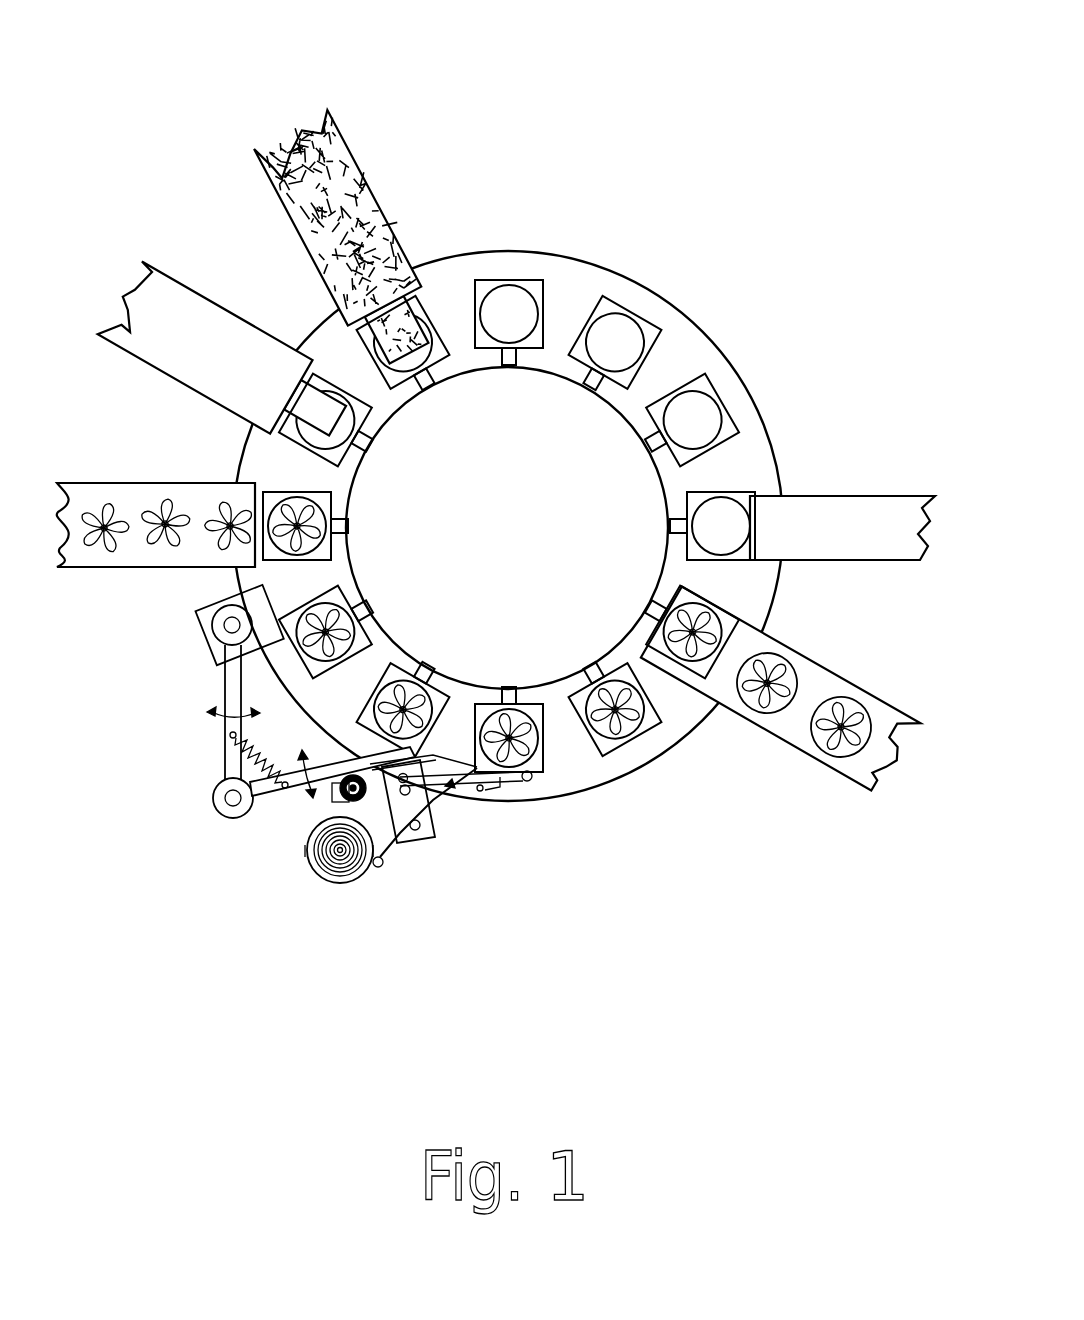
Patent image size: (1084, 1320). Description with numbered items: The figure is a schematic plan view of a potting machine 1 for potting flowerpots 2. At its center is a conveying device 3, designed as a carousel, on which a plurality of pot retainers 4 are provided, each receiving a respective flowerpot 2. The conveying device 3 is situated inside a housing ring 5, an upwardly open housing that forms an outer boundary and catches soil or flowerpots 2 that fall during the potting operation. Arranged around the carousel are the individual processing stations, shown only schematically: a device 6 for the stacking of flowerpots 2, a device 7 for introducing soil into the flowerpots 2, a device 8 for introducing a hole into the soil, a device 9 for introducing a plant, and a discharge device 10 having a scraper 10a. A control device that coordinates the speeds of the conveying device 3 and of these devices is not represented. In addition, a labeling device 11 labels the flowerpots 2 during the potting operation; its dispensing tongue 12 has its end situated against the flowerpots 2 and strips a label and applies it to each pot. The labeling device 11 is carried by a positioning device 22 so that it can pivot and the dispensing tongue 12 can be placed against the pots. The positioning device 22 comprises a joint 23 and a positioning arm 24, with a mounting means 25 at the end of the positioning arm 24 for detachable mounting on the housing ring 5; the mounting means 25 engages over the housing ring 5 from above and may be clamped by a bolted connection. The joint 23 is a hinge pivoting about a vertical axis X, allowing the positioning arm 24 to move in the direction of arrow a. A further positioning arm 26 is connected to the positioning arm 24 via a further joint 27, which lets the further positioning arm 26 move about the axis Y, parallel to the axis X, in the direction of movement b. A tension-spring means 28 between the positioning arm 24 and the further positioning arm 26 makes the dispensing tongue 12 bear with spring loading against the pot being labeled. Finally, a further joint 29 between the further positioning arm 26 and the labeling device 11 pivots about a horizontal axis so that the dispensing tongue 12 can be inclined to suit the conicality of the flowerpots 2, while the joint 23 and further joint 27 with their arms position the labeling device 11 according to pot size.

The potting machine 1 is at (678, 180).
The flowerpot 2 is at (525, 297).
The conveying device 3 is at (645, 342).
The pot retainer 4 is at (735, 427).
The housing ring 5 is at (648, 768).
The device for the stacking of flowerpots 6 is at (820, 523).
The device for introducing soil 7 is at (355, 168).
The device for introducing a hole 8 is at (195, 318).
The device for introducing a plant 9 is at (133, 484).
The discharge device 10 is at (846, 766).
The scraper 10a is at (712, 590).
The labeling device 11 is at (374, 895).
The dispensing tongue 12 is at (500, 792).
The positioning device 22 is at (240, 744).
The joint 23 is at (233, 680).
The positioning arm 24 is at (217, 712).
The mounting means 25 is at (257, 592).
The further positioning arm 26 is at (272, 790).
The further joint 27 is at (258, 773).
The tension-spring means 28 is at (270, 790).
The further joint 29 is at (462, 790).
The vertical axis X is at (223, 638).
The axis Y is at (232, 797).
The arrow a is at (217, 727).
The direction of movement b is at (280, 802).